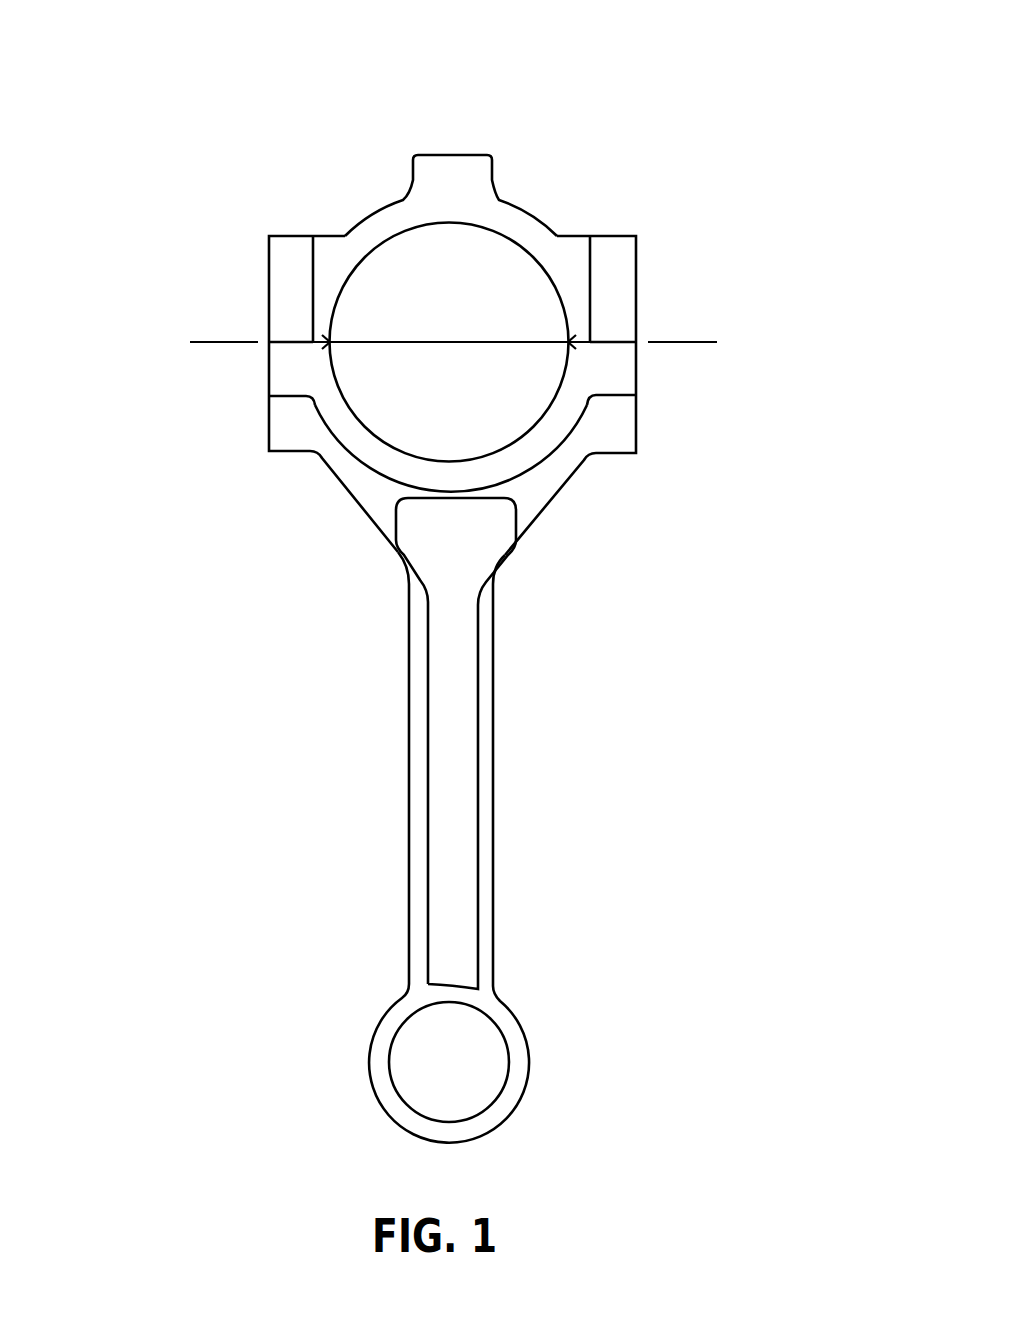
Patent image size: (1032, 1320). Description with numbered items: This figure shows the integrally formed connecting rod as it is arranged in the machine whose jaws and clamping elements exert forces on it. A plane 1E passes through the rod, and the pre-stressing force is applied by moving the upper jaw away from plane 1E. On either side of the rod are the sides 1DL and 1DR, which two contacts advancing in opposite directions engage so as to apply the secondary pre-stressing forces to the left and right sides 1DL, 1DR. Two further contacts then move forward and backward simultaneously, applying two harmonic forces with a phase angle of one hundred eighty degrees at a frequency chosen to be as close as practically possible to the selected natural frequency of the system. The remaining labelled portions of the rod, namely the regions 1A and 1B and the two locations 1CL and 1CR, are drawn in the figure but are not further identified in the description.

The connecting rod shank 1A is at (408, 733).
The big end cap boss 1B is at (453, 155).
The left fracture-splitting notch 1CL is at (324, 339).
The right fracture-splitting notch 1CR is at (571, 337).
The left side of connecting rod 1DL is at (267, 383).
The right side of connecting rod 1DR is at (637, 382).
The plane 1E is at (707, 342).